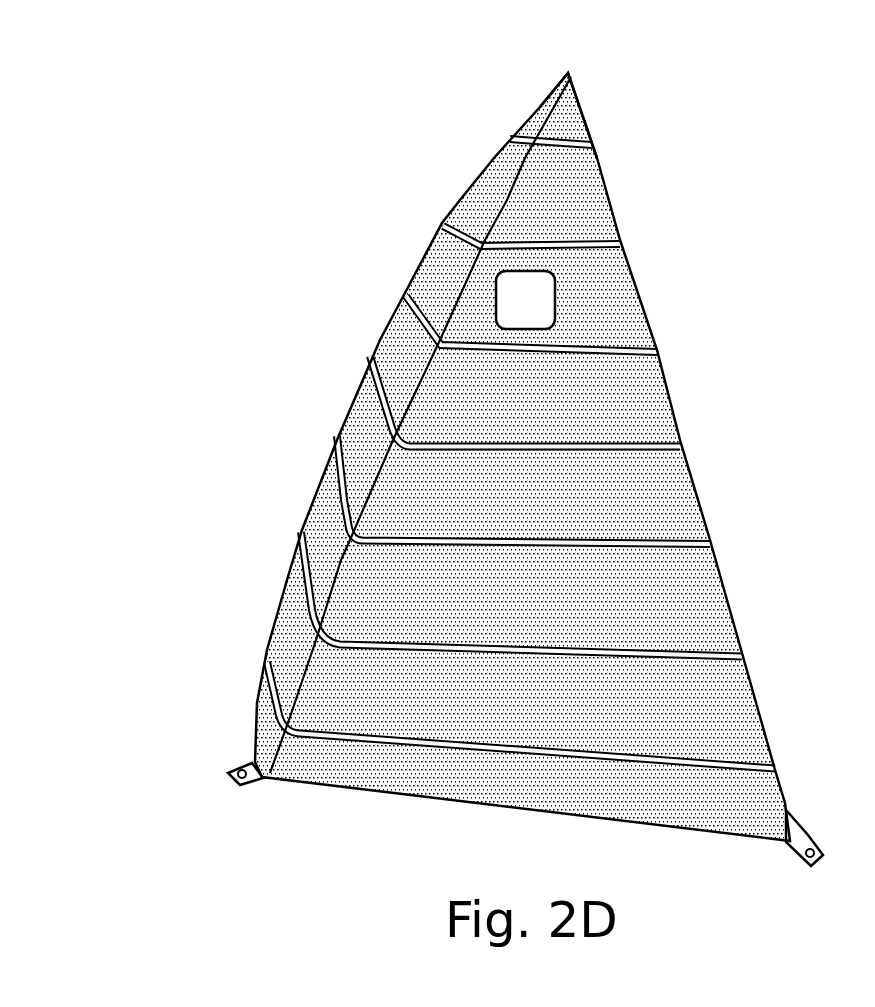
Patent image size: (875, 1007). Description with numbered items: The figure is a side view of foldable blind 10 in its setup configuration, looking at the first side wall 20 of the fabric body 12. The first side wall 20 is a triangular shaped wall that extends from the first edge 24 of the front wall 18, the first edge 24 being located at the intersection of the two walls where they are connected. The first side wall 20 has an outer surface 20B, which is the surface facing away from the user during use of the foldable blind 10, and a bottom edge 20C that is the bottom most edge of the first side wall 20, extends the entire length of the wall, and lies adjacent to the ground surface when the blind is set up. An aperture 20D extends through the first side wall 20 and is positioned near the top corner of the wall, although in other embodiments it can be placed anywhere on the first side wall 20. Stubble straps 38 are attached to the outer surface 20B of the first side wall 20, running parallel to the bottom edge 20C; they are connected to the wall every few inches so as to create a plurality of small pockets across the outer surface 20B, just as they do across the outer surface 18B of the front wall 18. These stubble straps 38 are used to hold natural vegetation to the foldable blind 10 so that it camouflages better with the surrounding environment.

The foldable blind 10 is at (523, 451).
The fabric body 12 is at (542, 108).
The front wall 18 is at (397, 345).
The outer surface 18B is at (443, 263).
The first side wall 20 is at (652, 492).
The outer surface 20B is at (641, 598).
The bottom edge 20C is at (673, 830).
The aperture 20D is at (558, 300).
The first edge 24 is at (343, 560).
The stubble straps 38 is at (380, 643).